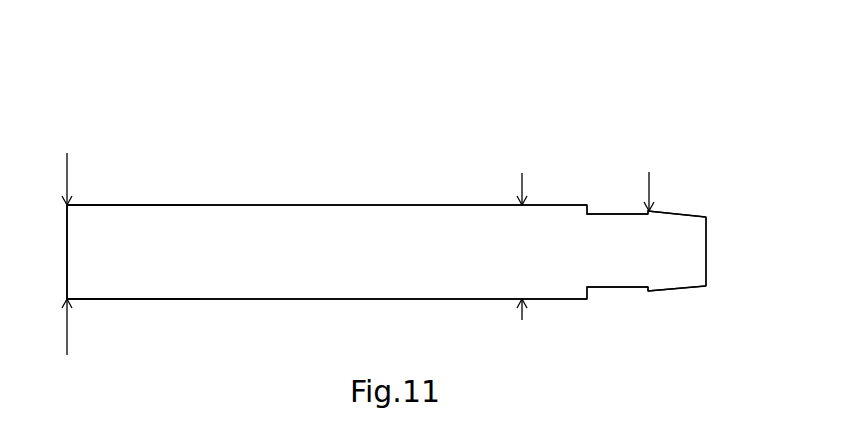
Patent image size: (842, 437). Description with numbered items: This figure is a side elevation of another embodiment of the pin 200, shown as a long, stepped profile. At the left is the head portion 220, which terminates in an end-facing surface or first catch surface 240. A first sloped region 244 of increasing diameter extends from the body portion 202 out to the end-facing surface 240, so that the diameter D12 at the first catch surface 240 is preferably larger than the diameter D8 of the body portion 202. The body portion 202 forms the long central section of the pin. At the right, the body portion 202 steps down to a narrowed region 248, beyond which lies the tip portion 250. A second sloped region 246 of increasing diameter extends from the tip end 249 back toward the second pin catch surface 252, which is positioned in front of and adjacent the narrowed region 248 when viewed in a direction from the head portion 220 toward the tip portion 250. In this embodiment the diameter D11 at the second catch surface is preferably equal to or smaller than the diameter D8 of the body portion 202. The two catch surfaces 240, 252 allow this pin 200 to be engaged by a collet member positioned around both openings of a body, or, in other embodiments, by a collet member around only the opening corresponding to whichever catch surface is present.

The pin 200 is at (386, 166).
The body portion 202 is at (378, 223).
The head portion 220 is at (90, 220).
The end-facing surface 240 is at (63, 298).
The first sloped region 244 is at (82, 300).
The second sloped region 246 is at (675, 288).
The narrowed region 248 is at (610, 288).
The tip end 249 is at (706, 247).
The tip portion 250 is at (683, 226).
The second pin catch surface 252 is at (649, 292).
The diameter of body portion D8 is at (517, 236).
The diameter at second catch surface D11 is at (651, 181).
The diameter at first catch surface D12 is at (71, 243).